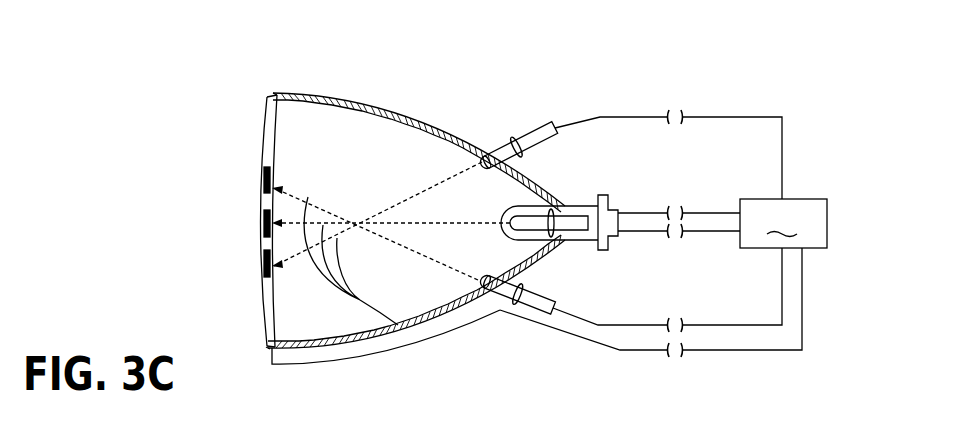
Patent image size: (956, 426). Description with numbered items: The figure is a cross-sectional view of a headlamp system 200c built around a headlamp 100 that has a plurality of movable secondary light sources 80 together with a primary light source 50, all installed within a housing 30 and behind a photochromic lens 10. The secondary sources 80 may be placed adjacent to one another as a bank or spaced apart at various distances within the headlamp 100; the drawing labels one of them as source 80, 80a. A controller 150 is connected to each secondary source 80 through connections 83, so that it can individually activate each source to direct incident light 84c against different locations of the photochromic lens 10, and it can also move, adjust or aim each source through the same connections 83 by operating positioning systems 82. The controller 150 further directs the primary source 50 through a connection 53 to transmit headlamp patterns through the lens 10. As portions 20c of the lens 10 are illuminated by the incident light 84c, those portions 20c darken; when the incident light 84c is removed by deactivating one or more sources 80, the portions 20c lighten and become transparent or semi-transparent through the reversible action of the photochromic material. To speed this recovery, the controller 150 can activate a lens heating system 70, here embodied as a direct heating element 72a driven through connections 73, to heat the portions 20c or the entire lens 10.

The photochromic lens 10 is at (262, 140).
The portions of the photochromic lens 20c is at (264, 262).
The housing 30 is at (396, 110).
The primary light source 50 is at (615, 205).
The connection 53 is at (717, 236).
The lens heating system 70 is at (277, 91).
The direct heating element 72a is at (268, 350).
The connections 73 is at (762, 353).
The movable secondary light sources 80 is at (547, 128).
The auxiliary light source 80a is at (543, 322).
The positioning systems 82 is at (522, 140).
The connections 83 is at (737, 116).
The incident light 84c is at (406, 337).
The headlamp 100 is at (447, 328).
The controller 150 is at (783, 223).
The headlamp system 200c is at (729, 51).